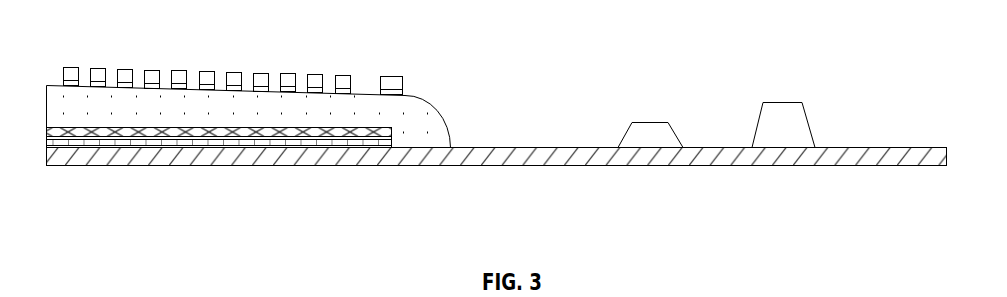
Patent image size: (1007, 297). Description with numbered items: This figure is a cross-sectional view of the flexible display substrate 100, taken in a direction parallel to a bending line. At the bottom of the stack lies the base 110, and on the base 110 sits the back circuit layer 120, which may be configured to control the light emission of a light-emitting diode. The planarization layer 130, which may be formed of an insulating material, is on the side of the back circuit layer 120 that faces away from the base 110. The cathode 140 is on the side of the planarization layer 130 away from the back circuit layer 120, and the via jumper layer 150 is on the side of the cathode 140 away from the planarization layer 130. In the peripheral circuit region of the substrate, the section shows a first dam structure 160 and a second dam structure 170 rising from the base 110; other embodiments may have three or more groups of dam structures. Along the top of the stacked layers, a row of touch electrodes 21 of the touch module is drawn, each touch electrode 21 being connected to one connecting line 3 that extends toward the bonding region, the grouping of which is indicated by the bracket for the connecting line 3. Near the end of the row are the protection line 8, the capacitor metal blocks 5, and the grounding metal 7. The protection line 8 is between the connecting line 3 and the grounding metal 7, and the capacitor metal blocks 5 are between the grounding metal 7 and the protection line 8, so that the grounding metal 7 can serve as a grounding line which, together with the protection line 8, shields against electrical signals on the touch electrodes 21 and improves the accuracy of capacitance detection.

The flexible display substrate 100 is at (574, 48).
The base 110 is at (471, 149).
The back circuit layer 120 is at (303, 146).
The planarization layer 130 is at (378, 144).
The cathode 140 is at (388, 128).
The via jumper layer 150 is at (441, 141).
The first dam structure 160 is at (670, 142).
The second dam structure 170 is at (804, 138).
The connecting line 3 is at (207, 56).
The touch electrode 21 is at (72, 72).
The protection line 8 is at (312, 78).
The capacitor metal block 5 is at (360, 62).
The grounding metal 7 is at (391, 84).